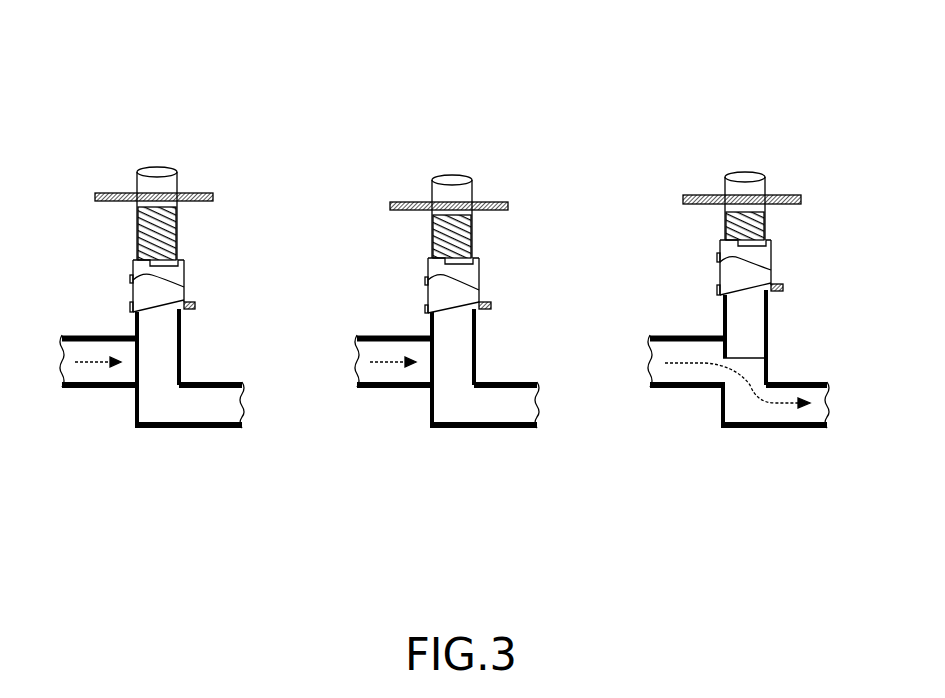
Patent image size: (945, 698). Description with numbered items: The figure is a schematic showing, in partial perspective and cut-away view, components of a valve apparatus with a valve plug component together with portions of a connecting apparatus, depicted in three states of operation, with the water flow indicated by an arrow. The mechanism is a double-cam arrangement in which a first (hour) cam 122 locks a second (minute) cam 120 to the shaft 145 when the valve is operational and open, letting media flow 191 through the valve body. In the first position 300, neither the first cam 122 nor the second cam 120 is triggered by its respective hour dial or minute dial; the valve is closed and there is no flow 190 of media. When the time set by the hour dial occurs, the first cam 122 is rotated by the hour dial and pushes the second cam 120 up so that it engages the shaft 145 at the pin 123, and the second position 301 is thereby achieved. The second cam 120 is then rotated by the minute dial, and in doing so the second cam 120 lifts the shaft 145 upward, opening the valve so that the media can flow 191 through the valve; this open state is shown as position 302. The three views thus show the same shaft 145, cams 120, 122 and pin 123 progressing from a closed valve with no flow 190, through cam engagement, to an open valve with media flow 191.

The shaft 145 is at (163, 167).
The second cam 120 is at (133, 263).
The first cam 122 is at (133, 293).
The pin 123 is at (180, 258).
The flow 190 is at (75, 362).
The media flow 191 is at (677, 365).
The first position 300 is at (263, 137).
The second position 301 is at (557, 147).
The position 302 is at (850, 140).